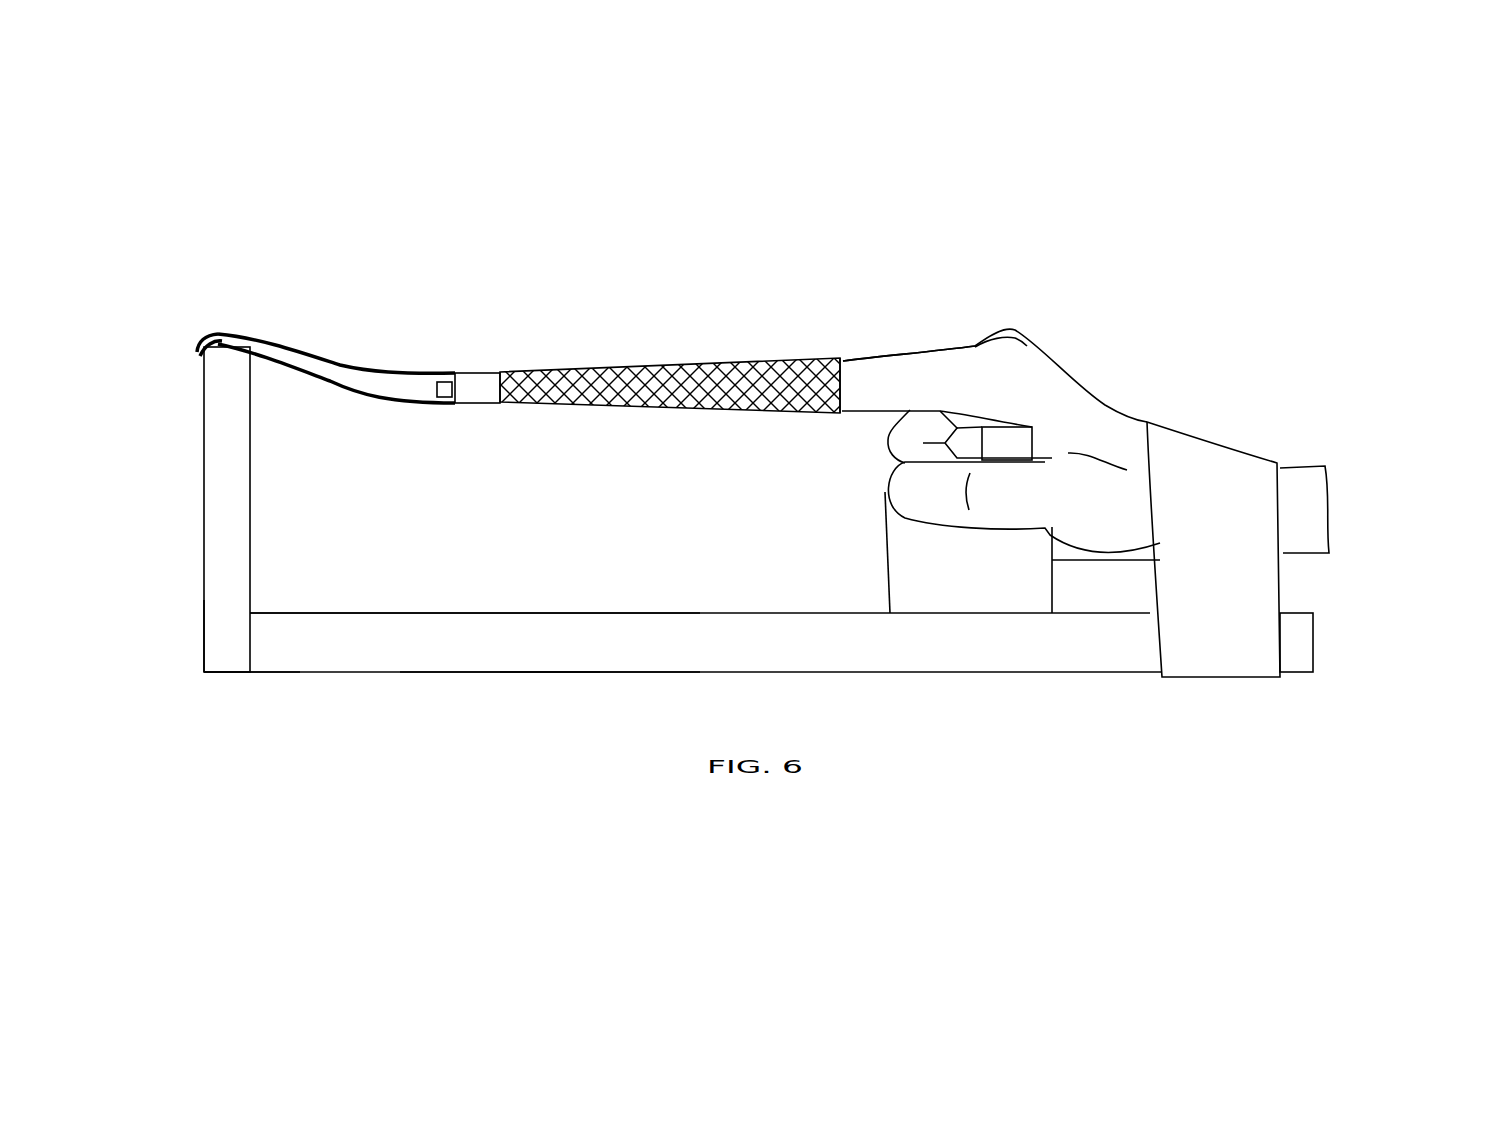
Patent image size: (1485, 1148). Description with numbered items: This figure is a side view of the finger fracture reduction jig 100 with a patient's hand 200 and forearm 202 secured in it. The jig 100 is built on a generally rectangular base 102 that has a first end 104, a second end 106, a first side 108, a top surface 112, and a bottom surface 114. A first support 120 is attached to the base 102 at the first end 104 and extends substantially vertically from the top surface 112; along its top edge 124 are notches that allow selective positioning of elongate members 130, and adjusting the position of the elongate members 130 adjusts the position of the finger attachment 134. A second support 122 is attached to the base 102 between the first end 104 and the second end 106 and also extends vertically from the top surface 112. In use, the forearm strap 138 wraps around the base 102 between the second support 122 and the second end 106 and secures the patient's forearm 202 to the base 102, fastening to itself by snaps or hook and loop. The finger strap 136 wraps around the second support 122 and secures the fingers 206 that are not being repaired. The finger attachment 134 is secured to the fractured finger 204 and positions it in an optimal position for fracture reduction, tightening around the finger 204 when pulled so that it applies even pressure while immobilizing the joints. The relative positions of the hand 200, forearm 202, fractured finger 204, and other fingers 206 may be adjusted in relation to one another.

The finger fracture reduction jig 100 is at (293, 207).
The base 102 is at (772, 613).
The first end 104 is at (250, 652).
The second end 106 is at (1294, 648).
The first side 108 is at (608, 658).
The top surface 112 is at (617, 613).
The bottom surface 114 is at (492, 660).
The first support 120 is at (217, 535).
The second support 122 is at (1001, 305).
The top edge 124 is at (203, 342).
The elongate members 130 is at (208, 343).
The finger attachment 134 is at (510, 408).
The finger strap 136 is at (978, 618).
The forearm strap 138 is at (1233, 493).
The hand 200 is at (1088, 422).
The forearm 202 is at (1330, 503).
The fractured finger 204 is at (868, 378).
The fingers 206 is at (928, 445).